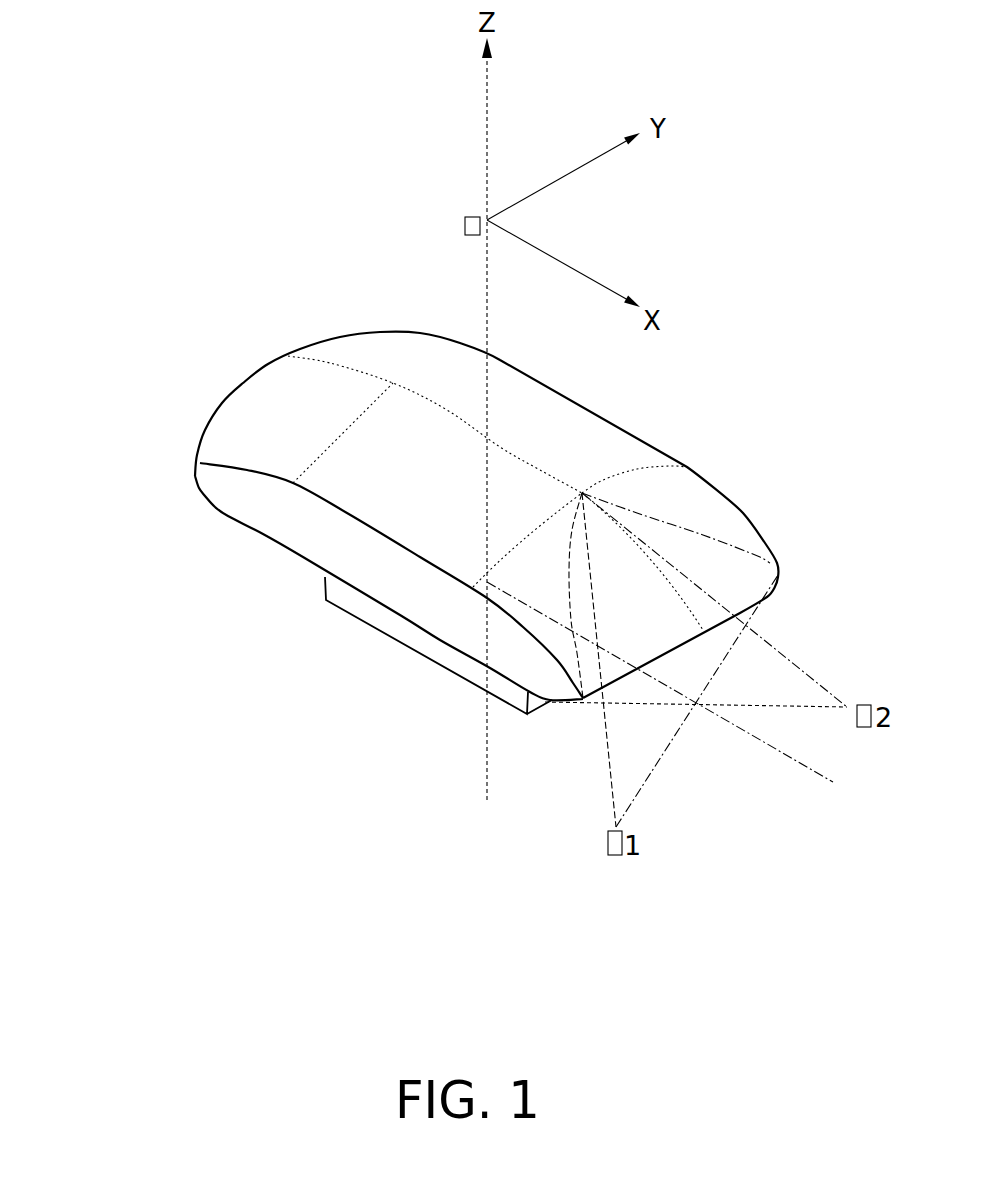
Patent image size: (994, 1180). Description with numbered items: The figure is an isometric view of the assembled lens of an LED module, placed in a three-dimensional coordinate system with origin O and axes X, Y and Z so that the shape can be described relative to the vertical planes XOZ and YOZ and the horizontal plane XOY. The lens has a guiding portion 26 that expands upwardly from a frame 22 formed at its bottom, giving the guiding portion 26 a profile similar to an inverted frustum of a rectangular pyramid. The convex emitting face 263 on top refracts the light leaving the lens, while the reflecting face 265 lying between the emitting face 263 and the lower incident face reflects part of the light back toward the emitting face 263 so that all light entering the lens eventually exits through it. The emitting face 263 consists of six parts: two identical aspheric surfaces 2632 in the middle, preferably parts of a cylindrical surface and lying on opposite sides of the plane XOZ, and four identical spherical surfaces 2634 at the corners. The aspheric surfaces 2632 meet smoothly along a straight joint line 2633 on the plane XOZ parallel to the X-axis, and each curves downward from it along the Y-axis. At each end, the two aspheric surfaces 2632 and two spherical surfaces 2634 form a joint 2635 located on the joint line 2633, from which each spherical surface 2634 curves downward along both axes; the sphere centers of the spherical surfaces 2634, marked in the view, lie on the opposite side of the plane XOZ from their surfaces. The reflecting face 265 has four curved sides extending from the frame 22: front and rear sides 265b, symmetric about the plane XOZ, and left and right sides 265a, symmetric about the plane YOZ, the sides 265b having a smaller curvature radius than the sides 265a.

The frame 22 is at (381, 622).
The guiding portion 26 is at (740, 567).
The emitting face 263 is at (756, 350).
The aspheric surface 2632 is at (633, 457).
The joint line 2633 is at (447, 412).
The spherical surface 2634 is at (692, 498).
The joint 2635 is at (393, 383).
The reflecting face 265 is at (126, 628).
The left/right side of reflecting face 265a is at (220, 520).
The front/rear side of reflecting face 265b is at (303, 537).